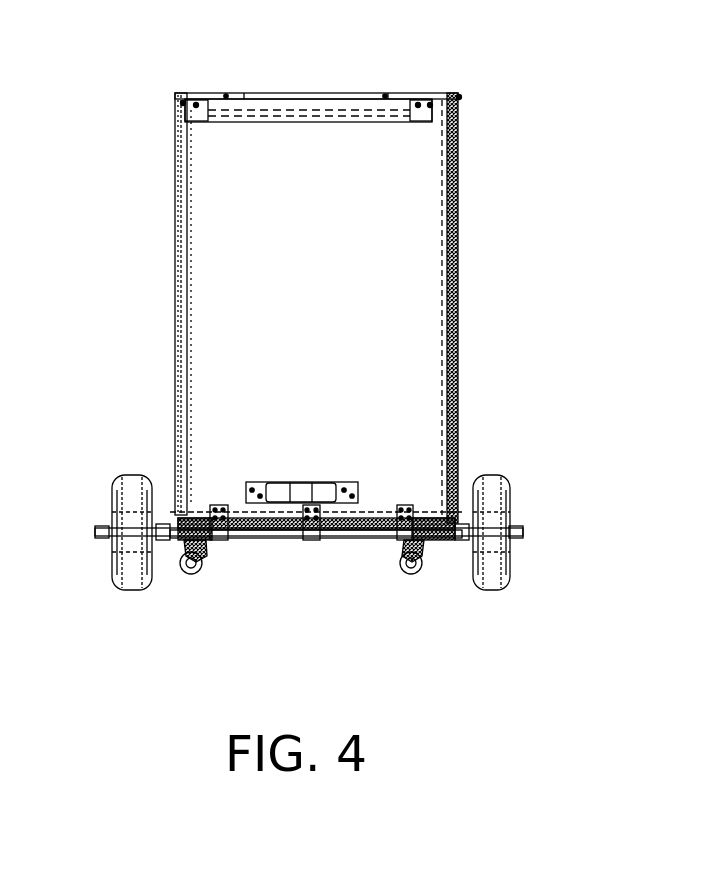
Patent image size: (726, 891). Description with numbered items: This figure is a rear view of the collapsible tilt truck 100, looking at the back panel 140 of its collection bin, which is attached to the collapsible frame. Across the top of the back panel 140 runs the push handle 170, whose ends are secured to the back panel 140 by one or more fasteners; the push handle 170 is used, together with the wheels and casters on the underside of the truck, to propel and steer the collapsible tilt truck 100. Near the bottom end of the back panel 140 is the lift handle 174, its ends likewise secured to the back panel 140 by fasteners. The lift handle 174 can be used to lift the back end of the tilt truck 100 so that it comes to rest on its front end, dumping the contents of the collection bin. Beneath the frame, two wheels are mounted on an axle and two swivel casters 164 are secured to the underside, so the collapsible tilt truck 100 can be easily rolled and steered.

The collapsible tilt truck 100 is at (457, 289).
The back panel 140 is at (203, 309).
The swivel casters 164 is at (404, 565).
The push handle 170 is at (287, 96).
The lift handle 174 is at (302, 492).